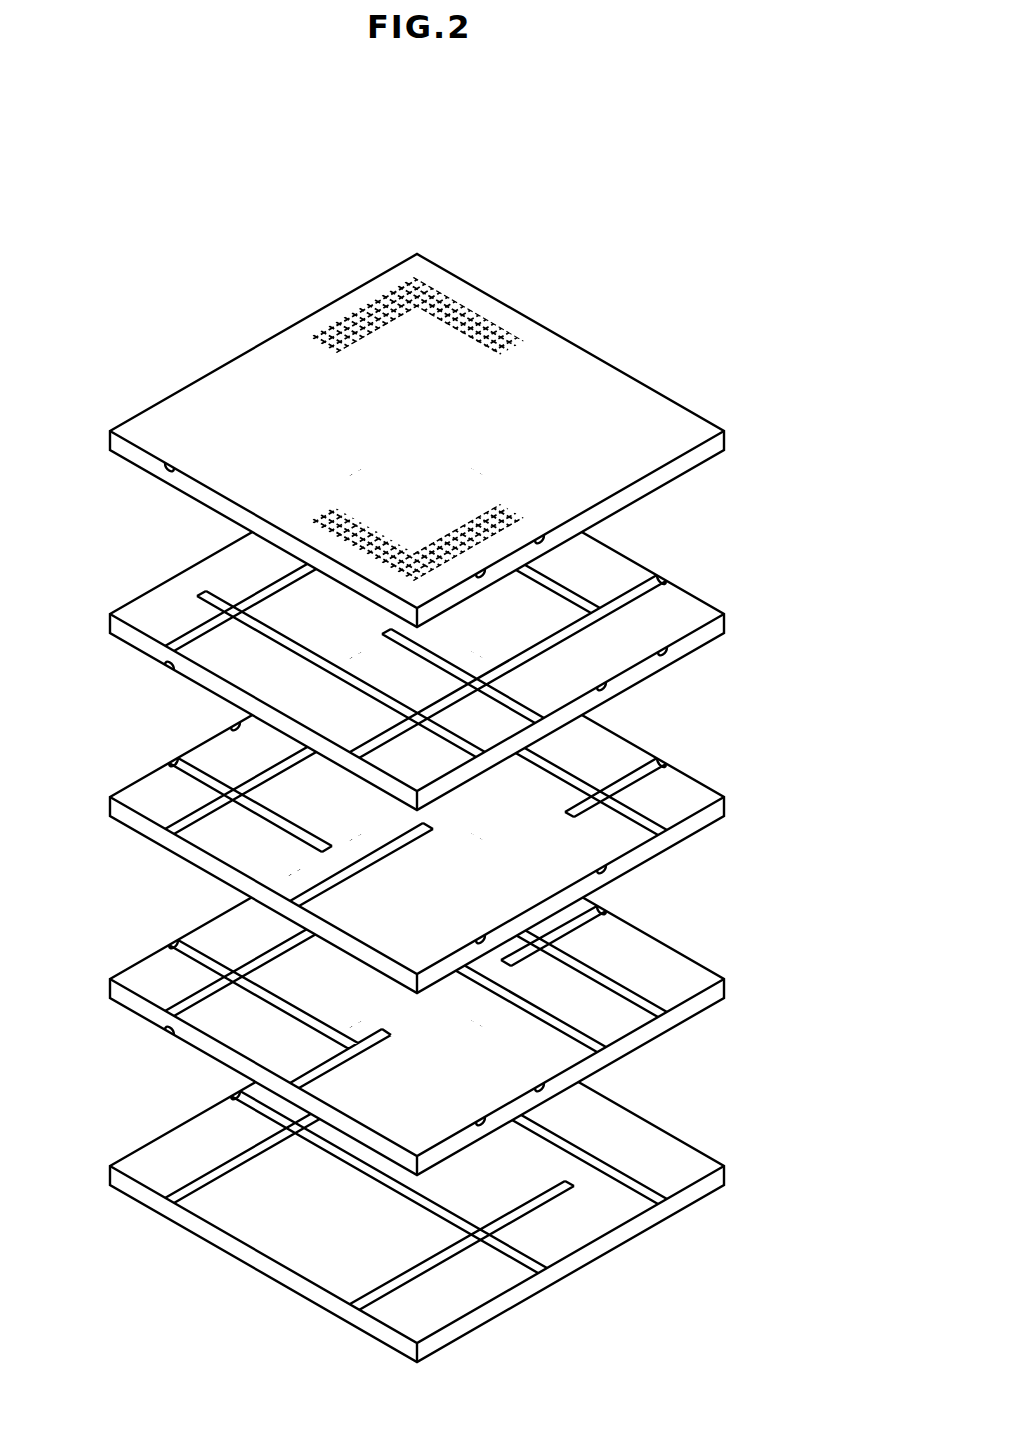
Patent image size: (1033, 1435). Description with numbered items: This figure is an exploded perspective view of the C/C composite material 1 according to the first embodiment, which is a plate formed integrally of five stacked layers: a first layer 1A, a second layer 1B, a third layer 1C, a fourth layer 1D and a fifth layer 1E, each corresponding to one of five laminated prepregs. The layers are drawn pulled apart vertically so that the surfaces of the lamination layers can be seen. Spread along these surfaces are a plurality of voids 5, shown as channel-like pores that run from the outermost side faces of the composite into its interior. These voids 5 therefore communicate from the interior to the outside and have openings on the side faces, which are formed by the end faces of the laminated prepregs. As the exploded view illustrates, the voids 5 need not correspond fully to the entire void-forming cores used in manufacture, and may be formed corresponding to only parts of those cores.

The C/C composite material 1 is at (446, 776).
The first layer 1A is at (729, 435).
The second layer 1B is at (729, 618).
The third layer 1C is at (729, 801).
The fourth layer 1D is at (729, 983).
The fifth layer 1E is at (729, 1170).
The void 5 is at (168, 652).